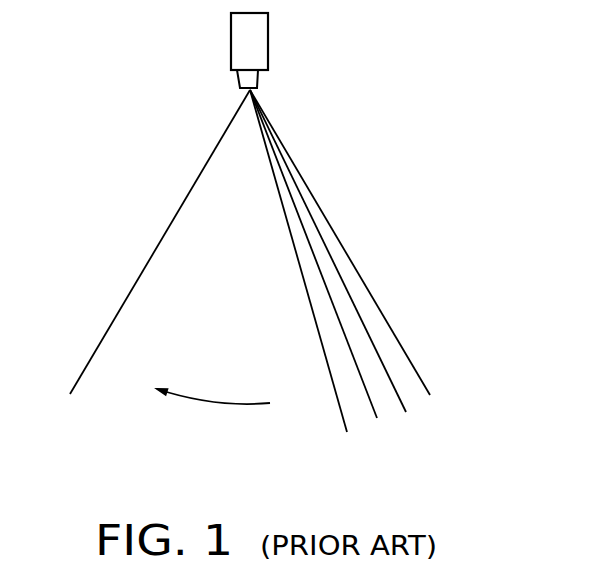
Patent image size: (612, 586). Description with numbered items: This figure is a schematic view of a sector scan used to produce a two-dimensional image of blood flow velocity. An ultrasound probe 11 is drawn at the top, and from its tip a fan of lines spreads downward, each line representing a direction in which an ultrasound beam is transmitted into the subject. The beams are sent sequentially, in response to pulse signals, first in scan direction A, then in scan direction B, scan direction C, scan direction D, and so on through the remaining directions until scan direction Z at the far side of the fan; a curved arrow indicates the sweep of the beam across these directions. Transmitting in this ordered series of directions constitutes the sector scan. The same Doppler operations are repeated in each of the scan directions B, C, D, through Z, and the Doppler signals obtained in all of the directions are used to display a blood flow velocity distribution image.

The ultrasound probe 11 is at (259, 40).
The scan direction Z is at (152, 264).
The scan direction D is at (305, 281).
The scan direction C is at (319, 275).
The scan direction B is at (334, 270).
The scan direction A is at (349, 260).